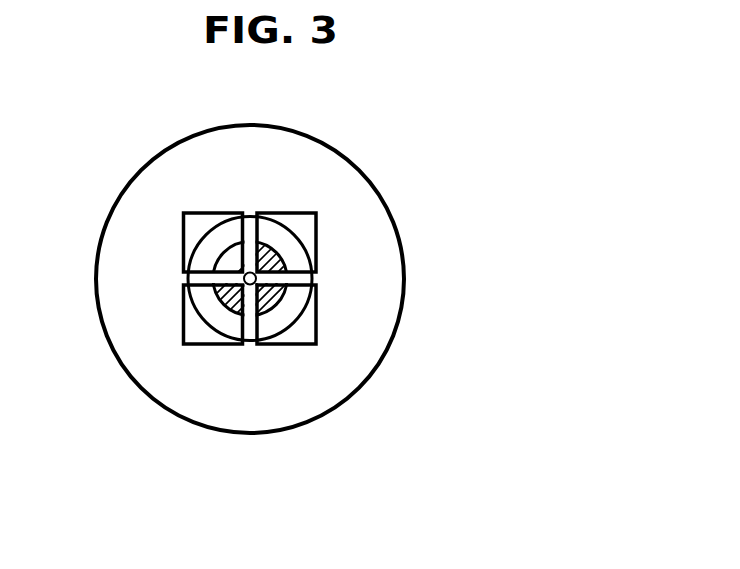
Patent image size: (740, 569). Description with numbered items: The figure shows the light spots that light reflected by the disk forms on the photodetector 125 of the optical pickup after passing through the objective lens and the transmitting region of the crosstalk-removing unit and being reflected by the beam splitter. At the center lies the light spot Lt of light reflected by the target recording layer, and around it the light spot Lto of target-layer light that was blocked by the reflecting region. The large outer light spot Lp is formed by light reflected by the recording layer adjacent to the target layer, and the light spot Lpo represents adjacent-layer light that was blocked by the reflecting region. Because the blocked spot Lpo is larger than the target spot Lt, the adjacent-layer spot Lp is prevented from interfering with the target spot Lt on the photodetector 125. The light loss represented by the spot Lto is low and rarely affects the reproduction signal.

The photodetector 125 is at (333, 279).
The light spot of light reflected by the adjacent recording layer Lp is at (100, 329).
The light spot of adjacent-layer light blocked by the reflecting region Lpo is at (206, 325).
The light spot of target-layer light blocked by the reflecting region Lto is at (283, 293).
The light spot of light reflected by the target recording layer Lt is at (268, 311).